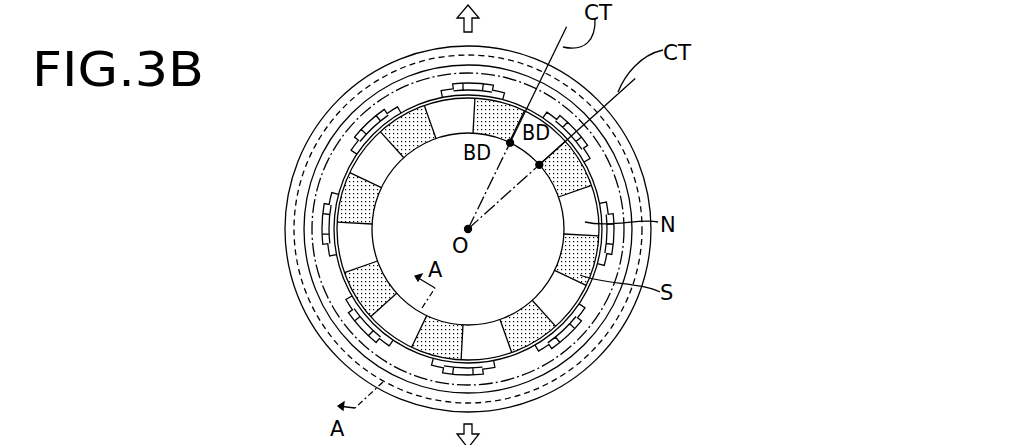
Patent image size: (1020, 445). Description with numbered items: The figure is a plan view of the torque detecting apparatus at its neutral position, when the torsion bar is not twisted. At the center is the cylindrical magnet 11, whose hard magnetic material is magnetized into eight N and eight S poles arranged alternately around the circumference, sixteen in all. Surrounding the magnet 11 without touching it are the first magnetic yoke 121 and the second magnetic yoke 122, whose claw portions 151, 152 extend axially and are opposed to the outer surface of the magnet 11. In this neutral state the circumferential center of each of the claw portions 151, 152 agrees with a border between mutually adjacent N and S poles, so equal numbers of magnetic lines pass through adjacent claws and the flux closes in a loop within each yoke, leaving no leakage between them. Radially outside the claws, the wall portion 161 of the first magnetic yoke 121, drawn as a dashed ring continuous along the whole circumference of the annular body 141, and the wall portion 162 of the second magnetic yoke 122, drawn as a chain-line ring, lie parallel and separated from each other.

The magnet 11 is at (548, 176).
The first magnetic yoke 121 is at (310, 140).
The second magnetic yoke 122 is at (342, 302).
The annular body 141 is at (610, 338).
The claw portions 151 is at (345, 173).
The claw portions 152 is at (325, 229).
The wall portion 161 is at (636, 158).
The wall portion 162 is at (648, 186).